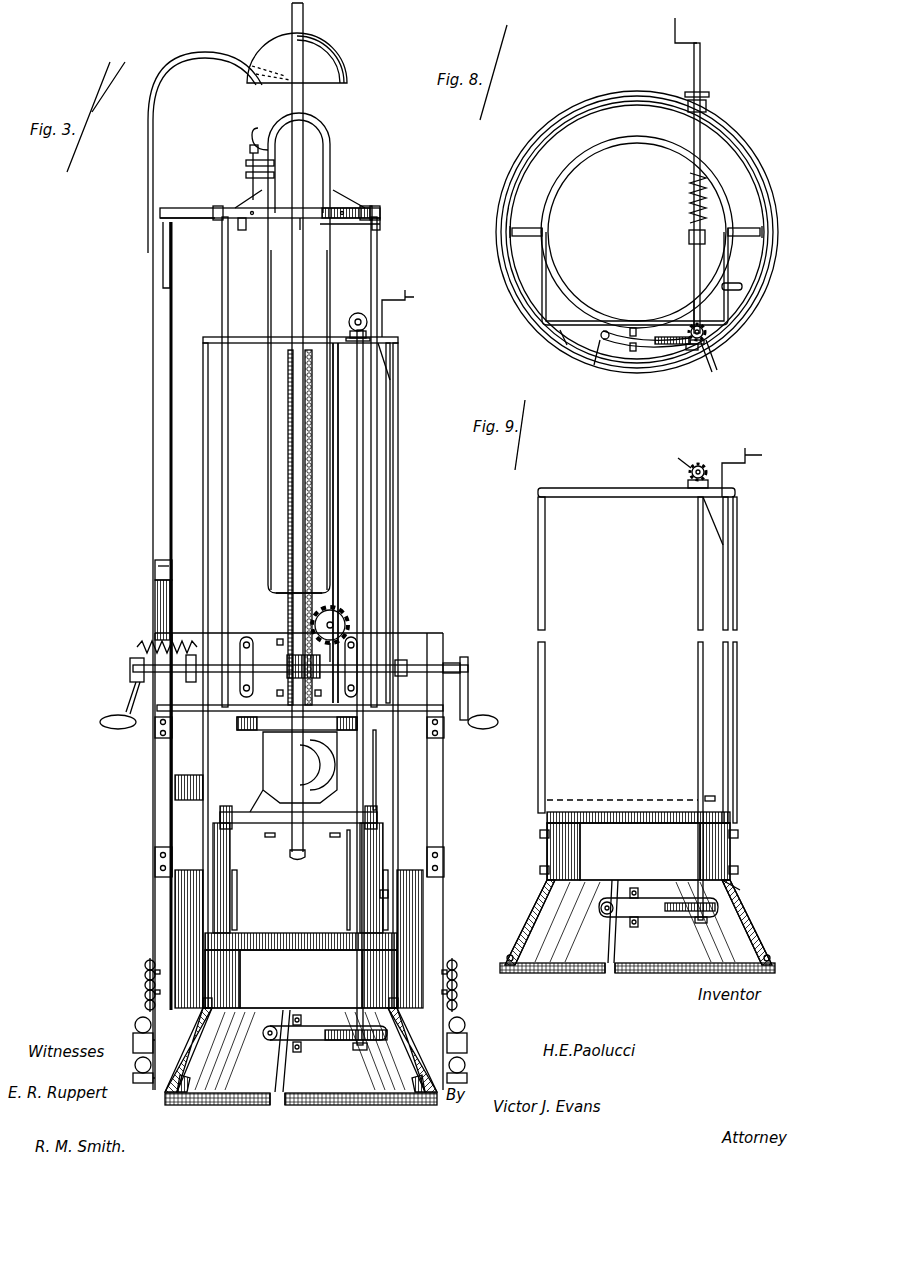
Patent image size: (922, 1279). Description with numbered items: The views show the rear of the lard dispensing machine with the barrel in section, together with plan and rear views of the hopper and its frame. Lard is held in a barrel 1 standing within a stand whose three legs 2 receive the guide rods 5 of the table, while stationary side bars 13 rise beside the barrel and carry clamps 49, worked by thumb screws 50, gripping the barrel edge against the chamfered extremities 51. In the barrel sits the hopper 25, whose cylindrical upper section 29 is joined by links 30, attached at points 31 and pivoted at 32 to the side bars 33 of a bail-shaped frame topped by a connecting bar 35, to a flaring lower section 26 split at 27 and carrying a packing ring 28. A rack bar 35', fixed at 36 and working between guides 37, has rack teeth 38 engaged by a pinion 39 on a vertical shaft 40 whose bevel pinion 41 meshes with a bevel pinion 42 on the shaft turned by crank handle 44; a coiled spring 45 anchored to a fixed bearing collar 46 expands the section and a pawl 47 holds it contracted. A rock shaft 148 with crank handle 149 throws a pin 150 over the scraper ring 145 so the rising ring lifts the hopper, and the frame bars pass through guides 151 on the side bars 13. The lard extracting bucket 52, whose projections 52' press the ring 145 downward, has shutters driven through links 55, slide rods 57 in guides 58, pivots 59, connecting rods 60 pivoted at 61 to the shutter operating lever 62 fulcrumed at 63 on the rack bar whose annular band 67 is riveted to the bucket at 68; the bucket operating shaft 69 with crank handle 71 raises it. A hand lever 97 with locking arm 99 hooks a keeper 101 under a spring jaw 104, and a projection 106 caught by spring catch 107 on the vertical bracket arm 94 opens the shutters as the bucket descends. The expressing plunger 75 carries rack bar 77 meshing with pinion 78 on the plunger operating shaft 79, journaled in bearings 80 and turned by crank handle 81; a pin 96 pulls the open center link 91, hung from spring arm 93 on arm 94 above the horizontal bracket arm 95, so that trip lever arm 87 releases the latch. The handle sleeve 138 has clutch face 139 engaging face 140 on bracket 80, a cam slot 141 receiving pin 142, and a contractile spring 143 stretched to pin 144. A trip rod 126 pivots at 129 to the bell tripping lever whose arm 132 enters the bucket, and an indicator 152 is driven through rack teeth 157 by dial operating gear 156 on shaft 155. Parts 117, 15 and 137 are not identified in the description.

In FIG. 3, the spring arm 93 is at (210, 60).
In FIG. 3, the vertical arm of bracket 94 is at (152, 347).
In FIG. 3, the dome cap 117 is at (322, 58).
In FIG. 3, the trip rod 126 is at (304, 101).
In FIG. 3, the pivotal connection of trip rod 129 is at (290, 857).
In FIG. 3, the open center link 91 is at (332, 132).
In FIG. 3, the clutch face 139 is at (268, 580).
In FIG. 3, the clutch face 140 is at (276, 593).
In FIG. 3, the arm of trip lever 87 is at (266, 135).
In FIG. 3, the spring jaw 104 is at (250, 149).
In FIG. 3, the locking arm 99 is at (246, 156).
In FIG. 3, the keeper 101 is at (246, 174).
In FIG. 3, the hand operated lever 97 is at (333, 190).
In FIG. 3, the pin 96 is at (345, 207).
In FIG. 3, the shutter operating lever 62 is at (368, 206).
In FIG. 3, the pivotal connection 61 is at (215, 208).
In FIG. 3, the fulcrum 63 is at (372, 230).
In FIG. 3, the projection 106 is at (190, 220).
In FIG. 3, the spring catch 107 is at (171, 277).
In FIG. 3, the connecting rods 60 is at (228, 433).
In FIG. 3, the connecting bar 35 is at (300, 325).
In FIG. 8, the connecting bar 35 is at (553, 352).
In FIG. 9, the connecting bar 35 is at (636, 507).
In FIG. 3, the side bars of hopper frame 33 is at (203, 467).
In FIG. 8, the side bars of hopper frame 33 is at (540, 222).
In FIG. 9, the side bars of hopper frame 33 is at (545, 759).
In FIG. 3, the bevel pinion 42 is at (356, 312).
In FIG. 8, the bevel pinion 42 is at (690, 325).
In FIG. 9, the bevel pinion 42 is at (702, 463).
In FIG. 3, the bevel pinion 41 is at (348, 343).
In FIG. 8, the bevel pinion 41 is at (715, 340).
In FIG. 9, the bevel pinion 41 is at (688, 484).
In FIG. 3, the crank handle 149 is at (406, 315).
In FIG. 8, the crank handle 149 is at (742, 287).
In FIG. 9, the crank handle 149 is at (763, 464).
In FIG. 3, the rock shaft 148 is at (391, 369).
In FIG. 9, the rock shaft 148 is at (728, 567).
In FIG. 3, the vertical shaft 40 is at (357, 437).
In FIG. 8, the vertical shaft 40 is at (715, 355).
In FIG. 9, the vertical shaft 40 is at (698, 684).
In FIG. 3, the plunger rack bar 77 is at (288, 482).
In FIG. 3, the rack teeth 157 is at (312, 520).
In FIG. 3, the indicator 152 is at (338, 600).
In FIG. 3, the contractile spring 143 is at (178, 610).
In FIG. 3, the horizontal arm of bracket 95 is at (160, 620).
In FIG. 3, the pin 144 is at (137, 636).
In FIG. 3, the pin 142 is at (130, 662).
In FIG. 3, the sleeve 138 is at (133, 683).
In FIG. 3, the operating crank handle 81 is at (102, 718).
In FIG. 3, the cam slot 141 is at (190, 682).
In FIG. 3, the plunger operating shaft 79 is at (280, 660).
In FIG. 3, the bearings 80 is at (252, 637).
In FIG. 3, the pinion 78 is at (402, 660).
In FIG. 3, the shaft 155 is at (338, 615).
In FIG. 3, the dial operating gear 156 is at (336, 620).
In FIG. 3, the bucket operating shaft 69 is at (465, 657).
In FIG. 3, the operating crank handle 71 is at (498, 720).
In FIG. 3, the side bars 13 is at (155, 824).
In FIG. 3, the housing wall 15 is at (180, 778).
In FIG. 3, the expressing plunger 75 is at (395, 735).
In FIG. 3, the pivotal connection 59 is at (204, 722).
In FIG. 3, the guides 151 is at (155, 856).
In FIG. 3, the slide rods 57 is at (258, 731).
In FIG. 3, the arm of bell tripping lever 132 is at (263, 759).
In FIG. 3, the cam 137 is at (335, 762).
In FIG. 3, the annular band 67 is at (257, 810).
In FIG. 3, the guides 58 is at (222, 815).
In FIG. 3, the projections 52' is at (195, 835).
In FIG. 3, the rivet attachment 68 is at (335, 838).
In FIG. 3, the lard extracting bucket 52 is at (298, 878).
In FIG. 3, the links 55 is at (347, 908).
In FIG. 3, the pin 150 is at (388, 900).
In FIG. 8, the pin 150 is at (694, 305).
In FIG. 9, the pin 150 is at (705, 798).
In FIG. 3, the scraper ring 145 is at (325, 938).
In FIG. 9, the scraper ring 145 is at (605, 800).
In FIG. 3, the cylindrical upper section 29 is at (301, 979).
In FIG. 9, the cylindrical upper section 29 is at (638, 851).
In FIG. 3, the hopper 25 is at (301, 979).
In FIG. 8, the hopper 25 is at (637, 232).
In FIG. 9, the hopper 25 is at (673, 851).
In FIG. 3, the pivotal connection 32 is at (212, 1010).
In FIG. 9, the pivotal connection 32 is at (541, 870).
In FIG. 3, the links 30 is at (205, 1040).
In FIG. 8, the links 30 is at (520, 238).
In FIG. 9, the links 30 is at (533, 905).
In FIG. 3, the attachment points 31 is at (212, 1080).
In FIG. 9, the attachment points 31 is at (509, 953).
In FIG. 3, the lower section 26 is at (315, 1105).
In FIG. 8, the lower section 26 is at (545, 163).
In FIG. 9, the lower section 26 is at (675, 973).
In FIG. 3, the packing ring 28 is at (300, 1106).
In FIG. 8, the packing ring 28 is at (520, 290).
In FIG. 9, the packing ring 28 is at (598, 973).
In FIG. 3, the split 27 is at (278, 1054).
In FIG. 8, the split 27 is at (604, 348).
In FIG. 9, the split 27 is at (616, 975).
In FIG. 3, the attachment point 36 is at (266, 1028).
In FIG. 8, the attachment point 36 is at (608, 330).
In FIG. 9, the attachment point 36 is at (604, 917).
In FIG. 3, the guides 37 is at (298, 1015).
In FIG. 9, the guides 37 is at (633, 888).
In FIG. 3, the rack bar 35' is at (342, 1053).
In FIG. 8, the rack bar 35' is at (661, 372).
In FIG. 9, the rack bar 35' is at (681, 881).
In FIG. 3, the pinion 39 is at (360, 1050).
In FIG. 9, the pinion 39 is at (740, 890).
In FIG. 3, the clamps 49 is at (152, 962).
In FIG. 3, the thumb screws 50 is at (148, 975).
In FIG. 3, the chamfered extremities 51 is at (140, 1018).
In FIG. 3, the shipping vessel 1 is at (133, 1040).
In FIG. 3, the guide rods 5 is at (467, 1040).
In FIG. 3, the legs 2 is at (465, 1063).
In FIG. 8, the crank handle 44 is at (672, 25).
In FIG. 8, the hopper expanding coiled spring 45 is at (701, 64).
In FIG. 8, the fixed bearing collar 46 is at (707, 106).
In FIG. 8, the pawl 47 is at (685, 97).
In FIG. 8, the rack teeth 38 is at (670, 348).
In FIG. 9, the rack teeth 38 is at (698, 923).